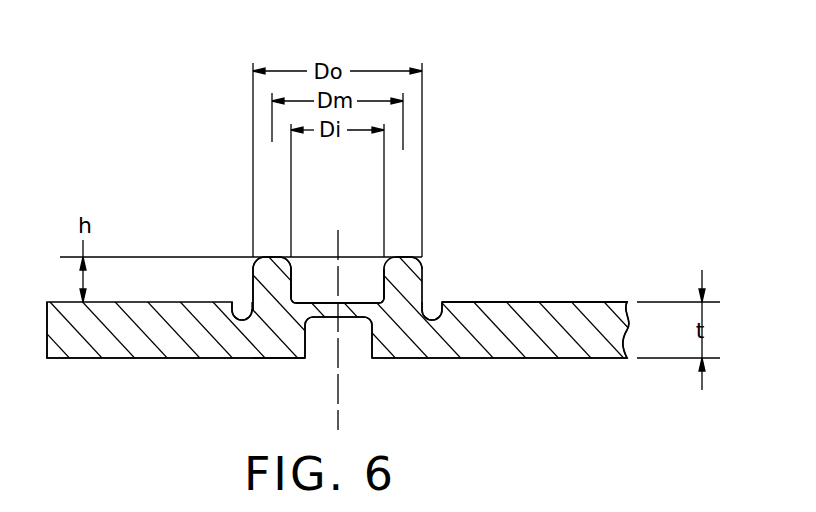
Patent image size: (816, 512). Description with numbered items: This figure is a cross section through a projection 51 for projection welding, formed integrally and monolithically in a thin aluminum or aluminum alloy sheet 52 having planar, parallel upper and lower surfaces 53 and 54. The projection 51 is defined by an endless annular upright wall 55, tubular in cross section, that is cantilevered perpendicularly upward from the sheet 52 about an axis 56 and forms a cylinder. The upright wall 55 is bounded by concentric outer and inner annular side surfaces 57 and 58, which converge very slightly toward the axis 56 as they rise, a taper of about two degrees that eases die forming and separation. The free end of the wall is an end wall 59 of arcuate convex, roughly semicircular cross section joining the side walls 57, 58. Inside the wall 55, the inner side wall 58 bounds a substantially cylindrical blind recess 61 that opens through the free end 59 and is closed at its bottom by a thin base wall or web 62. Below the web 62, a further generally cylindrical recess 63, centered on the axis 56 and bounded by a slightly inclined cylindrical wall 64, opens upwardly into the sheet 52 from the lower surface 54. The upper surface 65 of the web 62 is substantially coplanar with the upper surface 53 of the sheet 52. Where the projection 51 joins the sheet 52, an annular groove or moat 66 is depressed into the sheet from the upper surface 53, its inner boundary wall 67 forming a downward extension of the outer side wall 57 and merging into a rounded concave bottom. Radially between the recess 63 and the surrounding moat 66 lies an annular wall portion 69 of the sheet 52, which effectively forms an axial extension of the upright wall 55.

The projection 51 is at (412, 243).
The sheet 52 is at (597, 320).
The first side surface 53 is at (552, 302).
The second side surface 54 is at (90, 358).
The upright wall 55 is at (268, 275).
The axis 56 is at (337, 410).
The outer annular side surface 57 is at (252, 277).
The inner annular side surface 58 is at (303, 253).
The end wall 59 is at (421, 250).
The recess 61 is at (318, 273).
The base wall 62 is at (362, 297).
The recess 63 is at (362, 343).
The cylindrical wall 64 is at (307, 343).
The upper surface 65 is at (372, 297).
The annular groove 66 is at (242, 312).
The inner annular boundary wall 67 is at (437, 303).
The annular wall portion 69 is at (280, 317).